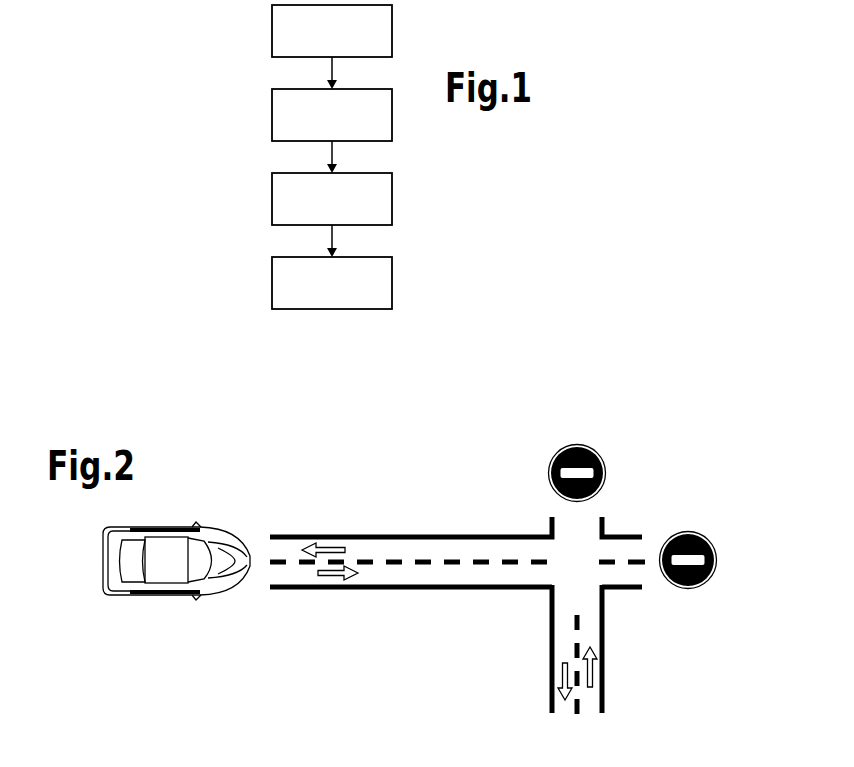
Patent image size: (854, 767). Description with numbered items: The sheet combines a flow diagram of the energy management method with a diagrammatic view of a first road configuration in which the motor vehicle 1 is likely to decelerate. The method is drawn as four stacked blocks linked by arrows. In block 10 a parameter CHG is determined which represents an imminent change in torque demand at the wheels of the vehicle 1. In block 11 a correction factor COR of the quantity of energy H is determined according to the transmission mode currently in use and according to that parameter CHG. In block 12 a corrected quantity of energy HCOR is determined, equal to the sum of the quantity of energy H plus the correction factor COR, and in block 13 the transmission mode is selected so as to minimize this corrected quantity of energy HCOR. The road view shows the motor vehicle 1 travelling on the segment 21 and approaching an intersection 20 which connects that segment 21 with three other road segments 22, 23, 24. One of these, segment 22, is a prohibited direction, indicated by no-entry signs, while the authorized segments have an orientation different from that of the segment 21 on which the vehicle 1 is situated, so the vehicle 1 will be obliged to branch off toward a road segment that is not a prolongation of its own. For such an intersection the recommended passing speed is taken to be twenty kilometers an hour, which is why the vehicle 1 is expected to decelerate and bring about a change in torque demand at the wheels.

In FIG. 2, the motor vehicle 1 is at (178, 602).
In FIG. 1, the block 10 is at (318, 43).
In FIG. 1, the block 11 is at (318, 128).
In FIG. 1, the block 12 is at (318, 212).
In FIG. 1, the block 13 is at (318, 296).
In FIG. 2, the intersection 20 is at (578, 565).
In FIG. 2, the segment 21 is at (403, 588).
In FIG. 2, the road segment 22 is at (625, 588).
In FIG. 2, the road segment 23 is at (605, 527).
In FIG. 2, the road segment 24 is at (605, 687).